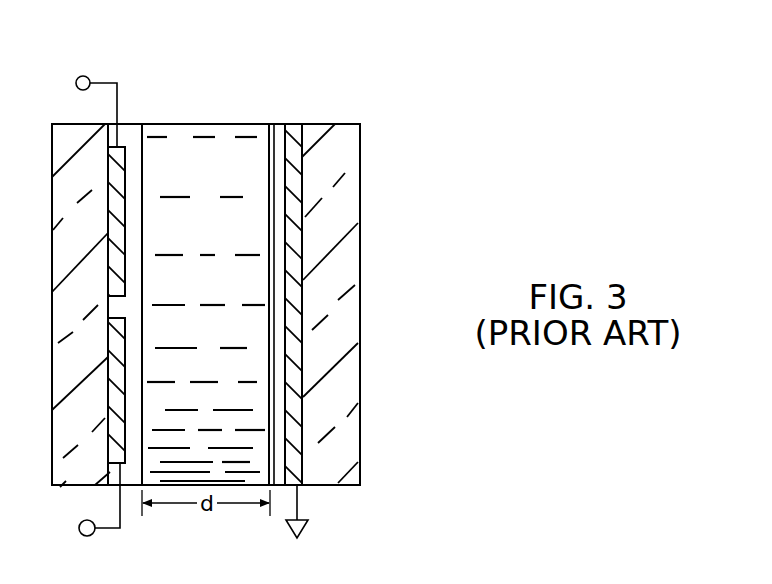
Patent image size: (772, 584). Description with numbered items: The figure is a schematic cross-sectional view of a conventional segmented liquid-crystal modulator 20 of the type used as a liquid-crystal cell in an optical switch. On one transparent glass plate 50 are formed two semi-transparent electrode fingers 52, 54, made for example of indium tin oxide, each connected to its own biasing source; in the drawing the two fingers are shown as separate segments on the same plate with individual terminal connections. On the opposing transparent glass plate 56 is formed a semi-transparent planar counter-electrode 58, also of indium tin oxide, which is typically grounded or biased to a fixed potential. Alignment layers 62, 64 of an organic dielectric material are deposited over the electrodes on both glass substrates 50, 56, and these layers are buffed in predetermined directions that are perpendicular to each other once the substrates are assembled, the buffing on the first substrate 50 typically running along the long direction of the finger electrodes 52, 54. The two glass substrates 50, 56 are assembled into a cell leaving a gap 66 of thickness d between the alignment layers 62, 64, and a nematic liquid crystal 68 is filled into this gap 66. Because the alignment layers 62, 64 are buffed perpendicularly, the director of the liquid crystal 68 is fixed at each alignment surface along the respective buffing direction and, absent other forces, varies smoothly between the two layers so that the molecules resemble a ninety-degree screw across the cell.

The segmented liquid-crystal modulator 20 is at (386, 299).
The transparent glass plate 50 is at (67, 348).
The electrode finger 52 is at (115, 161).
The electrode finger 54 is at (118, 451).
The transparent glass plate 56 is at (358, 269).
The planar counter-electrode 58 is at (320, 286).
The alignment layer 62 is at (151, 260).
The alignment layer 64 is at (290, 259).
The gap 66 is at (213, 114).
The nematic liquid crystal 68 is at (206, 246).